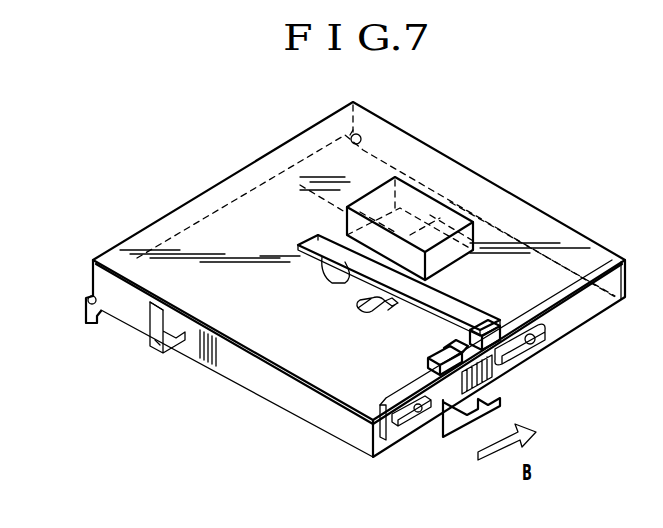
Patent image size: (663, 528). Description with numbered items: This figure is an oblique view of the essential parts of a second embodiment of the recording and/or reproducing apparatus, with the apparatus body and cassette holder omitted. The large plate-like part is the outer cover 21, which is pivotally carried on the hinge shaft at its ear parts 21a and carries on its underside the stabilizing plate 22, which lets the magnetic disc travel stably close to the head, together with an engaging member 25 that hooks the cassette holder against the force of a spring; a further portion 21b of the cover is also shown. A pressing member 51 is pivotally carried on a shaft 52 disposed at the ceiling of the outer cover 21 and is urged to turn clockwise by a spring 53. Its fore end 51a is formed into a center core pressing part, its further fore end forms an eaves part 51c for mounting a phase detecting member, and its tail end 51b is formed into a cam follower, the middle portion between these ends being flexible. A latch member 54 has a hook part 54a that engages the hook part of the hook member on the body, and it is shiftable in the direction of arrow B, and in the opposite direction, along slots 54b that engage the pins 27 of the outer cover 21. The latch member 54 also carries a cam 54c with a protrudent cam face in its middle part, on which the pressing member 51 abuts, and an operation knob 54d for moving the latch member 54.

The outer cover 21 is at (484, 194).
The ear parts of the outer cover 21a is at (360, 136).
The tab 21b is at (89, 327).
The stabilizing plate 22 is at (416, 190).
The engaging member 25 is at (159, 352).
The pins 27 is at (540, 333).
The pressing member 51 is at (438, 298).
The fore end of the pressing member 51a is at (333, 277).
The tail end of the pressing member 51b is at (487, 353).
The eaves part 51c is at (312, 243).
The shaft 52 is at (363, 310).
The spring 53 is at (386, 322).
The latch member 54 is at (487, 373).
The hook part of the latch member 54a is at (483, 418).
The slots 54b is at (527, 330).
The cam 54c is at (440, 350).
The operation knob 54d is at (487, 387).